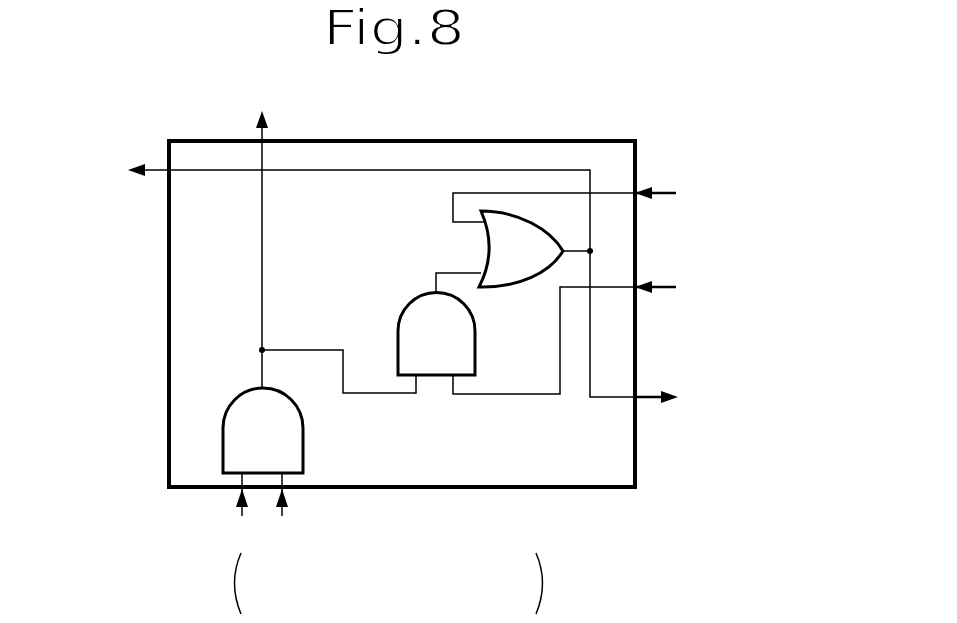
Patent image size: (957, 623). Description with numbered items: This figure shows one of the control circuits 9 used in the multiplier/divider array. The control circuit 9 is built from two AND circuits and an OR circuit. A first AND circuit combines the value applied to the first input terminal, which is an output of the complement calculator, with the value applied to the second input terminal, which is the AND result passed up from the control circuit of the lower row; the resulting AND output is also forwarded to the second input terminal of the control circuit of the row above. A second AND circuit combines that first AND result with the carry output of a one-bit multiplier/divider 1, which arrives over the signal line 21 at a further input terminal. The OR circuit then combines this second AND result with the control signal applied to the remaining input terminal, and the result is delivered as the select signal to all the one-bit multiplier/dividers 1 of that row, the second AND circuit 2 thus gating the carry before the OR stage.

The control circuit 9 is at (534, 120).
The signal line 21 is at (842, 356).
The one-bit multiplier/divider 1 is at (242, 510).
The input a2 2 is at (281, 510).